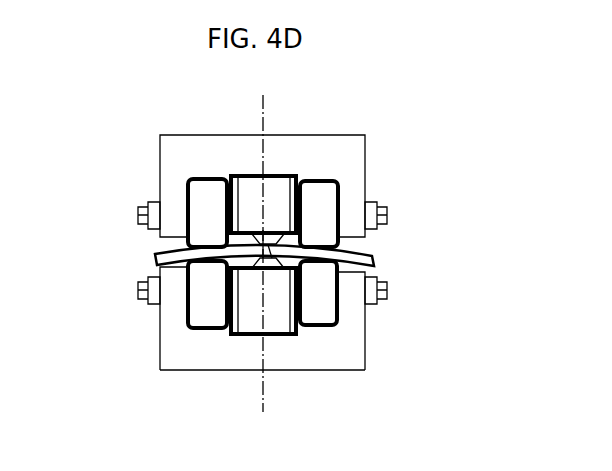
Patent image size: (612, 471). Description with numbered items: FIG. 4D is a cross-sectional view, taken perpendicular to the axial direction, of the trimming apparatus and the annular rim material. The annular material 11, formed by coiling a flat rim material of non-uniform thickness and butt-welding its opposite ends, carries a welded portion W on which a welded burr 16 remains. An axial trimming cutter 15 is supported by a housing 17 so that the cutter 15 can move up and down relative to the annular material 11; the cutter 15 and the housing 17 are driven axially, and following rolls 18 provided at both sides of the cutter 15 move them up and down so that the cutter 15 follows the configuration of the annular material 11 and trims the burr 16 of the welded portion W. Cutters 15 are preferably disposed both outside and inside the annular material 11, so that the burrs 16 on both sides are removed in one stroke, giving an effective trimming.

The annular material 11 is at (162, 258).
The axial trimming cutter 15 is at (246, 188).
The welded burr 16 is at (288, 258).
The housing 17 is at (333, 150).
The following rolls 18 is at (197, 203).
The welded portion W is at (282, 250).